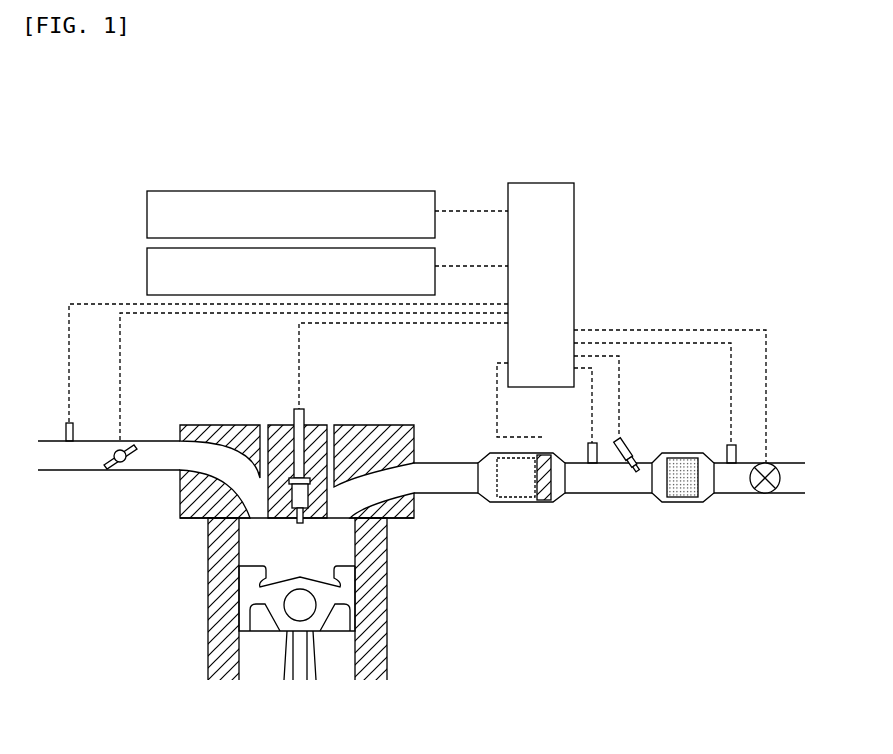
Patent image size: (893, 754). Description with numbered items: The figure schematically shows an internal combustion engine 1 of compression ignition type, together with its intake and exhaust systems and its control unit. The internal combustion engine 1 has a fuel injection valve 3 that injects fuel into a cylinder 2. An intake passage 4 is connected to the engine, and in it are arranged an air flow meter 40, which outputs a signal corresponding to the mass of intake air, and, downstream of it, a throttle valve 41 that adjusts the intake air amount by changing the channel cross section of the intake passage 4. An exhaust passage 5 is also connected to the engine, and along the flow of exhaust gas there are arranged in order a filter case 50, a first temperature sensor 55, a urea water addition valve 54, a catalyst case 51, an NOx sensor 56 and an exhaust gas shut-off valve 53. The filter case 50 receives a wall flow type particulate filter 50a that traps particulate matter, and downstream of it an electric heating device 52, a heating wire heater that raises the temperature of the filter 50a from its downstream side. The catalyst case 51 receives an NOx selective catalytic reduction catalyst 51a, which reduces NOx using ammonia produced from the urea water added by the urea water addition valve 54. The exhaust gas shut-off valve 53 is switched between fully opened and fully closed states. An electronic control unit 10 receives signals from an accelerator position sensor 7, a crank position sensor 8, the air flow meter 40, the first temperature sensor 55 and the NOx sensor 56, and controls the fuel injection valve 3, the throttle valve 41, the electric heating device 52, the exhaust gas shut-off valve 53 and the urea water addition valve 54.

The internal combustion engine 1 is at (190, 573).
The cylinder 2 is at (356, 535).
The fuel injection valve 3 is at (293, 415).
The intake passage 4 is at (80, 472).
The exhaust passage 5 is at (455, 494).
The accelerator position sensor 7 is at (147, 214).
The crank position sensor 8 is at (147, 268).
The electronic control unit (ECU) 10 is at (574, 237).
The air flow meter 40 is at (64, 422).
The throttle valve 41 is at (134, 446).
The filter case 50 is at (500, 503).
The particulate filter 50a is at (528, 499).
The catalyst case 51 is at (668, 503).
The NOx selective catalytic reduction catalyst 51a is at (690, 454).
The electric heating device 52 is at (543, 502).
The exhaust gas shut-off valve 53 is at (768, 463).
The urea water addition valve 54 is at (628, 449).
The first temperature sensor 55 is at (590, 444).
The NOx sensor 56 is at (735, 446).